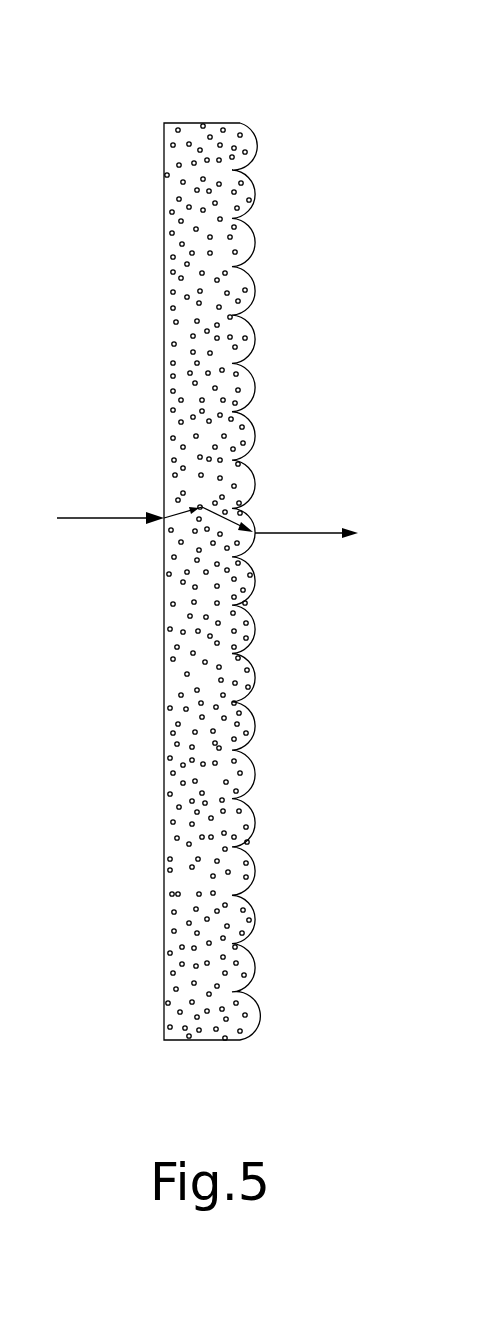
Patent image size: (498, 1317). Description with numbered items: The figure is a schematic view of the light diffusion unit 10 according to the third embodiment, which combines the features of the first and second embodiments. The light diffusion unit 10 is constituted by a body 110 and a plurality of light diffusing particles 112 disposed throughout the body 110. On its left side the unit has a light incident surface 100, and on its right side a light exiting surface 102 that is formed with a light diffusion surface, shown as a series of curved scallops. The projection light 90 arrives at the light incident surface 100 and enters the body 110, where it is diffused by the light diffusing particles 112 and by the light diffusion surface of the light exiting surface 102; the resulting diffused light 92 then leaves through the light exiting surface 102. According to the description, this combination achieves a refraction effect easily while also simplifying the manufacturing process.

The light diffusion unit 10 is at (274, 101).
The light incident surface 100 is at (152, 272).
The light exiting surface 102 is at (272, 290).
The body 110 is at (177, 678).
The light diffusing particles 112 is at (241, 391).
The projection light 90 is at (75, 518).
The diffused light 92 is at (307, 533).